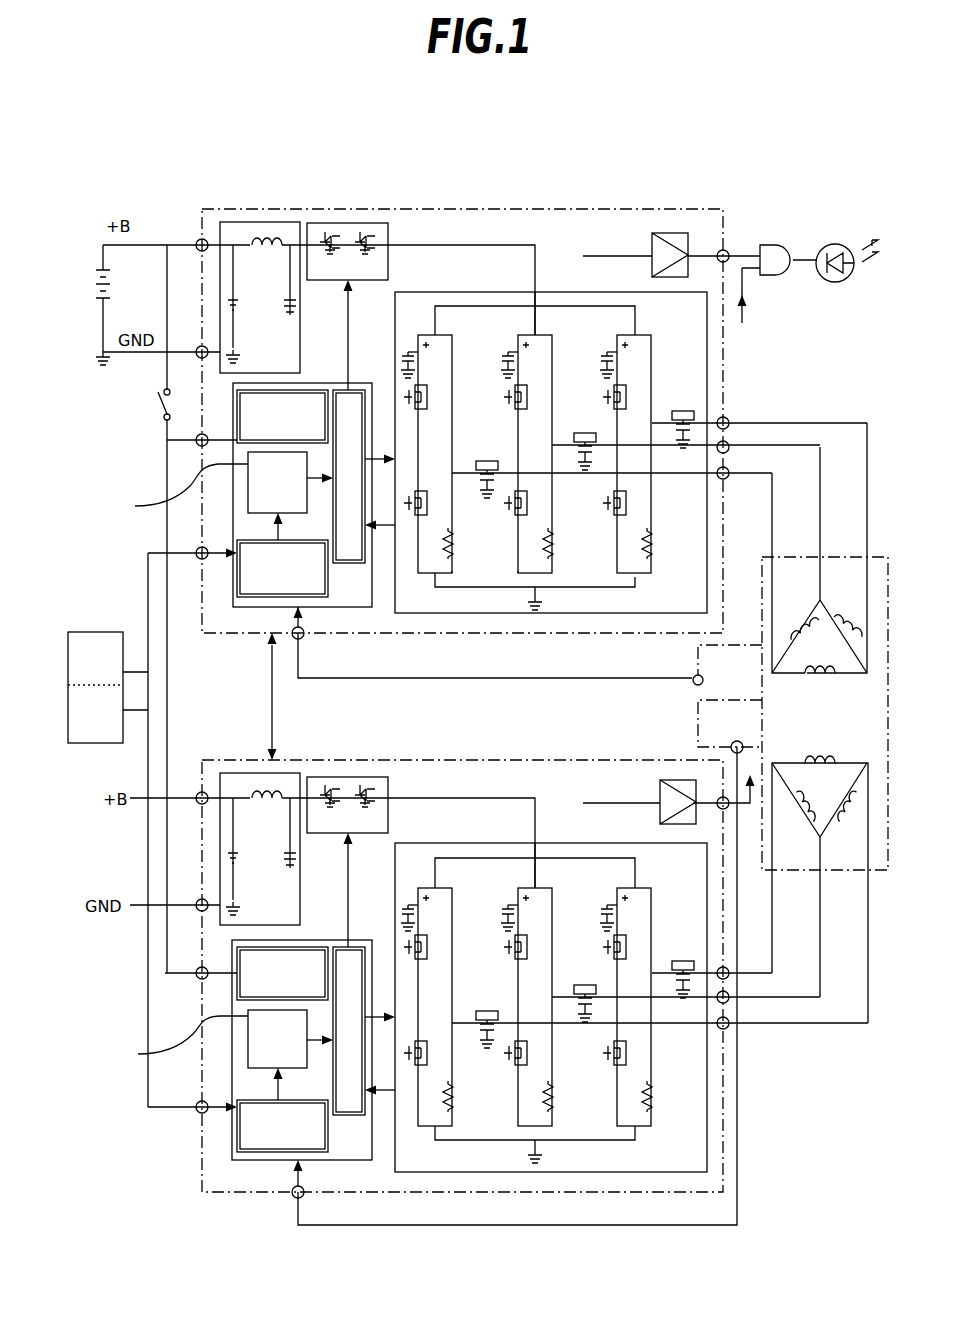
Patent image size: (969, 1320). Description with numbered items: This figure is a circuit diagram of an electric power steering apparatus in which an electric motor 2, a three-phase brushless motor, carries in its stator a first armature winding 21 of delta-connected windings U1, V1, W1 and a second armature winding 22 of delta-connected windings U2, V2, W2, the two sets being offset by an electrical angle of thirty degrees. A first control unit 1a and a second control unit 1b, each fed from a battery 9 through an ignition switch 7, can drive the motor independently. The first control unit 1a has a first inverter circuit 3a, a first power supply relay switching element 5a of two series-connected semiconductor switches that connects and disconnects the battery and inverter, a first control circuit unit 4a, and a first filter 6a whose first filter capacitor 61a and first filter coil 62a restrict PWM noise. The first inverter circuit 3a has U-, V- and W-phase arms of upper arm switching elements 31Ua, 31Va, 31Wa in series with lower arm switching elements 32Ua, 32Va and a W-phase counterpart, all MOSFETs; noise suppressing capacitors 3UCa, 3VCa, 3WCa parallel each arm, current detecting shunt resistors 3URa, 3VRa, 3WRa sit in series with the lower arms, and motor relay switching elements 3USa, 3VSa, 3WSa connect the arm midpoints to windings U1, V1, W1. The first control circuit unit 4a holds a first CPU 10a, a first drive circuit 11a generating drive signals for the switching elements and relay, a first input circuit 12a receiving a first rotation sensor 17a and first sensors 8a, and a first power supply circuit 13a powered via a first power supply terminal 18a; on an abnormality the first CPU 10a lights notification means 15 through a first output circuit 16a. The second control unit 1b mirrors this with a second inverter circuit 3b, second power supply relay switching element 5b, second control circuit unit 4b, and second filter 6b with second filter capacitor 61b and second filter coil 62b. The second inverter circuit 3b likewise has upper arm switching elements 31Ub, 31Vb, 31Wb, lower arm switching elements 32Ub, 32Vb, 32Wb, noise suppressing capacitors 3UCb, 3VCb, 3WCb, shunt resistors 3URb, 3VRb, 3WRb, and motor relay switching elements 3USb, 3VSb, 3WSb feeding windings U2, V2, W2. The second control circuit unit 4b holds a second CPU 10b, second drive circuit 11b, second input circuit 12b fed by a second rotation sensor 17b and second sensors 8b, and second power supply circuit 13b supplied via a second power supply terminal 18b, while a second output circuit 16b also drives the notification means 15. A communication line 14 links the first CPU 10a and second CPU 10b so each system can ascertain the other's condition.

The first control unit 1a is at (565, 209).
The second control unit 1b is at (589, 1192).
The electric motor 2 is at (832, 556).
The first armature winding 21 is at (792, 566).
The second armature winding 22 is at (795, 871).
The first inverter circuit 3a is at (531, 502).
The second inverter circuit 3b is at (551, 937).
The first control circuit unit 4a is at (275, 608).
The second control circuit unit 4b is at (263, 1170).
The first power supply relay switching element 5a is at (336, 223).
The second power supply relay switching element 5b is at (337, 777).
The first filter 6a is at (263, 253).
The second filter 6b is at (193, 849).
The first filter capacitor 61a is at (251, 321).
The second filter capacitor 61b is at (251, 875).
The first filter coil 62a is at (267, 296).
The second filter coil 62b is at (267, 849).
The ignition switch 7 is at (166, 417).
The first sensors 8a is at (96, 632).
The second sensors 8b is at (96, 743).
The battery 9 is at (103, 270).
The first CPU 10a is at (207, 484).
The second CPU 10b is at (203, 1039).
The first drive circuit 11a is at (349, 615).
The second drive circuit 11b is at (342, 1225).
The first input circuit 12a is at (240, 600).
The second input circuit 12b is at (225, 1115).
The first power supply circuit 13a is at (312, 376).
The second power supply circuit 13b is at (317, 930).
The communication line 14 is at (270, 705).
The notification means 15 is at (836, 244).
The first output circuit 16a is at (667, 233).
The second output circuit 16b is at (660, 813).
The first rotation sensor 17a is at (698, 648).
The second rotation sensor 17b is at (698, 703).
The first power supply terminal 18a is at (189, 420).
The second power supply terminal 18b is at (189, 783).
The first U-phase upper arm switching element 31Ua is at (446, 382).
The first V-phase upper arm switching element 31Va is at (553, 368).
The first W-phase upper arm switching element 31Wa is at (656, 368).
The first U-phase lower arm switching element 32Ua is at (448, 505).
The first V-phase lower arm switching element 32Va is at (548, 533).
The first U-phase noise suppressing capacitor 3UCa is at (403, 353).
The first V-phase noise suppressing capacitor 3VCa is at (460, 377).
The first W-phase noise suppressing capacitor 3WCa is at (557, 377).
The first U-phase motor relay switching element 3USa is at (487, 460).
The first V-phase motor relay switching element 3VSa is at (601, 433).
The first W-phase motor relay switching element 3WSa is at (685, 410).
The first U-phase current detecting shunt resistor 3URa is at (450, 561).
The first V-phase current detecting shunt resistor 3VRa is at (553, 548).
The first W-phase current detecting shunt resistor 3WRa is at (646, 552).
The second V-phase upper arm switching element 31Vb is at (458, 927).
The second W-phase upper arm switching element 31Wb is at (555, 927).
The second U-phase upper arm switching element 31Ub is at (658, 925).
The second V-phase lower arm switching element 32Vb is at (448, 1055).
The second W-phase lower arm switching element 32Wb is at (550, 1080).
The second U-phase lower arm switching element 32Ub is at (635, 1080).
The second V-phase noise suppressing capacitor 3VCb is at (408, 902).
The second W-phase noise suppressing capacitor 3WCb is at (508, 920).
The second U-phase noise suppressing capacitor 3UCb is at (606, 920).
The second V-phase motor relay switching element 3VSb is at (478, 1011).
The second W-phase motor relay switching element 3WSb is at (580, 990).
The second U-phase motor relay switching element 3USb is at (685, 961).
The second V-phase current detecting shunt resistor 3VRb is at (452, 1104).
The second W-phase current detecting shunt resistor 3WRb is at (550, 1098).
The second U-phase current detecting shunt resistor 3URb is at (646, 1096).
The first U-phase winding U1 is at (820, 675).
The first V-phase winding V1 is at (804, 622).
The first W-phase winding W1 is at (833, 630).
The second U-phase winding U2 is at (825, 752).
The second V-phase winding V2 is at (856, 834).
The second W-phase winding W2 is at (789, 834).